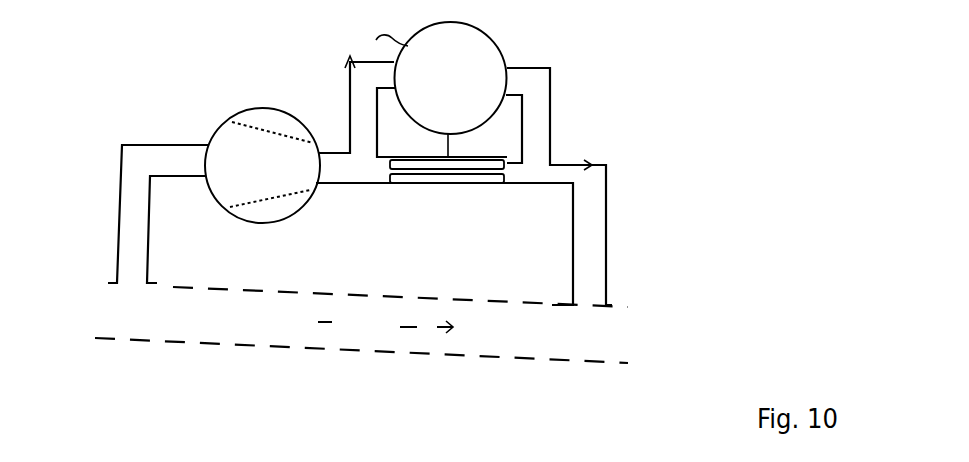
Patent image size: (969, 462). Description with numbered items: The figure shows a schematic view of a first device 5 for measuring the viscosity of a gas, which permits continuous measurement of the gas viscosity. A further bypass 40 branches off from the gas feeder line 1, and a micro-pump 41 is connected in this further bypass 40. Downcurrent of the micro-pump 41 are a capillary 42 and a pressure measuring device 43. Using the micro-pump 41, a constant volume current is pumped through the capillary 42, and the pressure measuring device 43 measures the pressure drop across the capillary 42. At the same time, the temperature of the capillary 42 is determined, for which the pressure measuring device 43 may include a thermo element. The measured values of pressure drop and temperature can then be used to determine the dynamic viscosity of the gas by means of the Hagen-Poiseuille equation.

The device for measuring the viscosity 5 is at (140, 74).
The further bypass 40 is at (165, 152).
The micro-pump 41 is at (290, 128).
The capillary 42 is at (428, 188).
The pressure measuring device 43 is at (490, 40).
The gas feeder line 1 is at (227, 308).